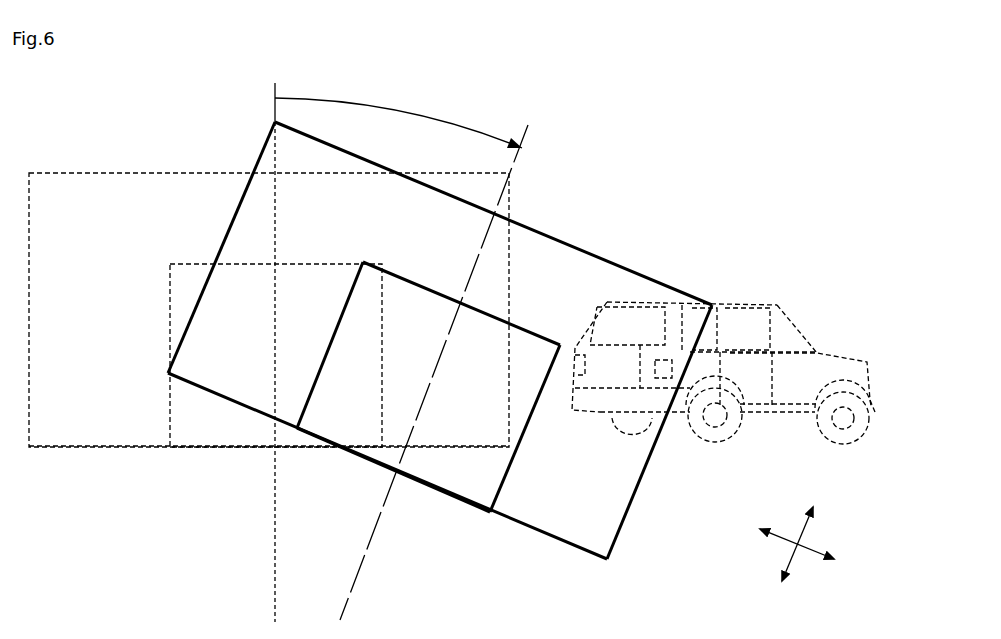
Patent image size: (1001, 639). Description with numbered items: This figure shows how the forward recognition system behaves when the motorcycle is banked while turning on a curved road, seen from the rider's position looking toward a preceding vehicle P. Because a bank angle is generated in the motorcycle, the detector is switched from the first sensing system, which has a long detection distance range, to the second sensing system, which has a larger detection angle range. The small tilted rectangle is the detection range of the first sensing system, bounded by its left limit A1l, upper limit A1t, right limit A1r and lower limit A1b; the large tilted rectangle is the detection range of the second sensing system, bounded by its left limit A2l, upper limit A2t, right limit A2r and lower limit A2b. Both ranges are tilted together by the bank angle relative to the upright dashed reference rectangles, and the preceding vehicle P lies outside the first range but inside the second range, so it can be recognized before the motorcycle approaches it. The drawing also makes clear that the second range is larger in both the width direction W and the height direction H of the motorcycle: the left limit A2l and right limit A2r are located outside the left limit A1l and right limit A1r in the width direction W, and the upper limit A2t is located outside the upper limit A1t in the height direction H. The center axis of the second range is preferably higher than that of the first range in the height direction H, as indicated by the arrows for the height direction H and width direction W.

The left limit of the detection range A2 A2l is at (259, 160).
The upper limit of the detection range A2 A2t is at (529, 229).
The right limit of the detection range A2 A2r is at (650, 463).
The bottom edge of second imaging area A2b is at (255, 410).
The left limit of the detection range A1 A1l is at (341, 318).
The upper limit of the detection range A1 A1t is at (530, 332).
The right limit of the detection range A1 A1r is at (525, 428).
The bottom edge of first imaging area A1b is at (470, 508).
The preceding vehicle P is at (780, 328).
The height direction H is at (808, 535).
The width direction W is at (810, 545).